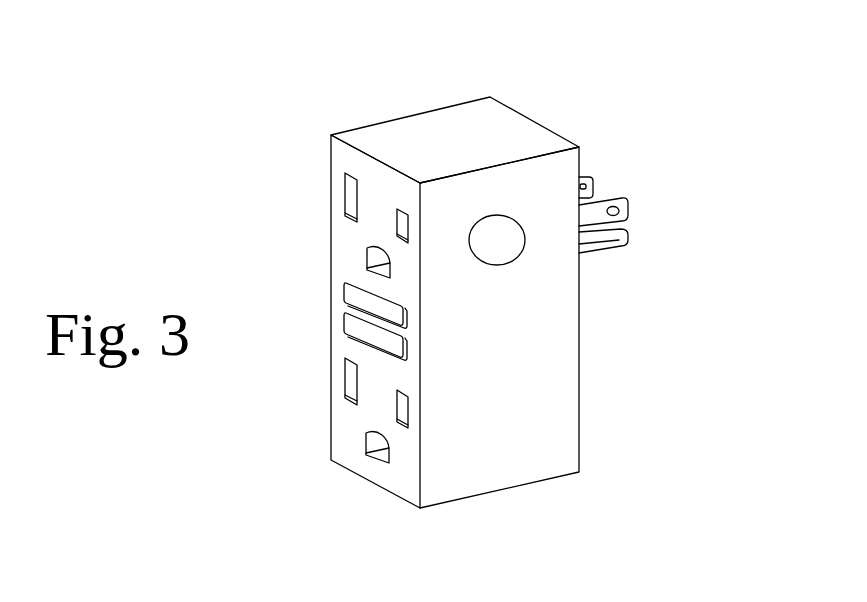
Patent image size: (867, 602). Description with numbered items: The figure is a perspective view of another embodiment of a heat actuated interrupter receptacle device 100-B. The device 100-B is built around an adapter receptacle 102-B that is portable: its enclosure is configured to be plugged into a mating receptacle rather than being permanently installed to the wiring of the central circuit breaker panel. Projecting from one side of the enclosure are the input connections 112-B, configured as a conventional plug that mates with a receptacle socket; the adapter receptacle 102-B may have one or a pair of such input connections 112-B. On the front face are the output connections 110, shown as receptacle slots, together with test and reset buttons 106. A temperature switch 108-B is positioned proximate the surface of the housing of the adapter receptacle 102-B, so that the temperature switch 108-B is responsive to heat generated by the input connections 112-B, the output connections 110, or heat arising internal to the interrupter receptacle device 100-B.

The heat actuated interrupter receptacle device 100-B is at (222, 80).
The adapter receptacle 102-B is at (580, 400).
The test and reset buttons 106 is at (344, 292).
The temperature switch 108-B is at (502, 265).
The output connections 110 is at (346, 384).
The input connections 112-B is at (630, 206).